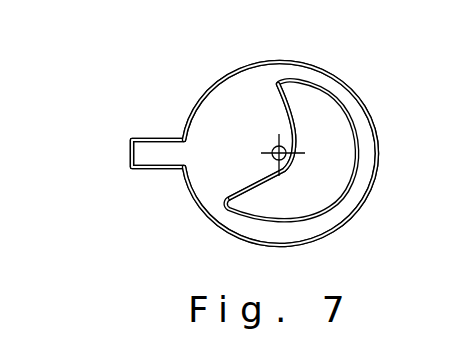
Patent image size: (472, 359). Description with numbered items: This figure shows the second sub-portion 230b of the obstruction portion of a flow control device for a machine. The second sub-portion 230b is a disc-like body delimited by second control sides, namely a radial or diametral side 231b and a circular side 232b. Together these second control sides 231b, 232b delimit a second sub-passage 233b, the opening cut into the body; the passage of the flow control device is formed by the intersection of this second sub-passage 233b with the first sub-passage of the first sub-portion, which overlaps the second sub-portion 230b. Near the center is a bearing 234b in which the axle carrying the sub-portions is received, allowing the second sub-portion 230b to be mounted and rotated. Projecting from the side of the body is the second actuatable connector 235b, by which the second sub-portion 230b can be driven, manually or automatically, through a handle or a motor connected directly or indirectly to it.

The second sub-portion 230b is at (207, 178).
The radial or diametral side 231b is at (282, 103).
The circular side 232b is at (345, 178).
The second sub-passage 233b is at (300, 115).
The bearing 234b is at (273, 150).
The second actuatable connector 235b is at (150, 152).